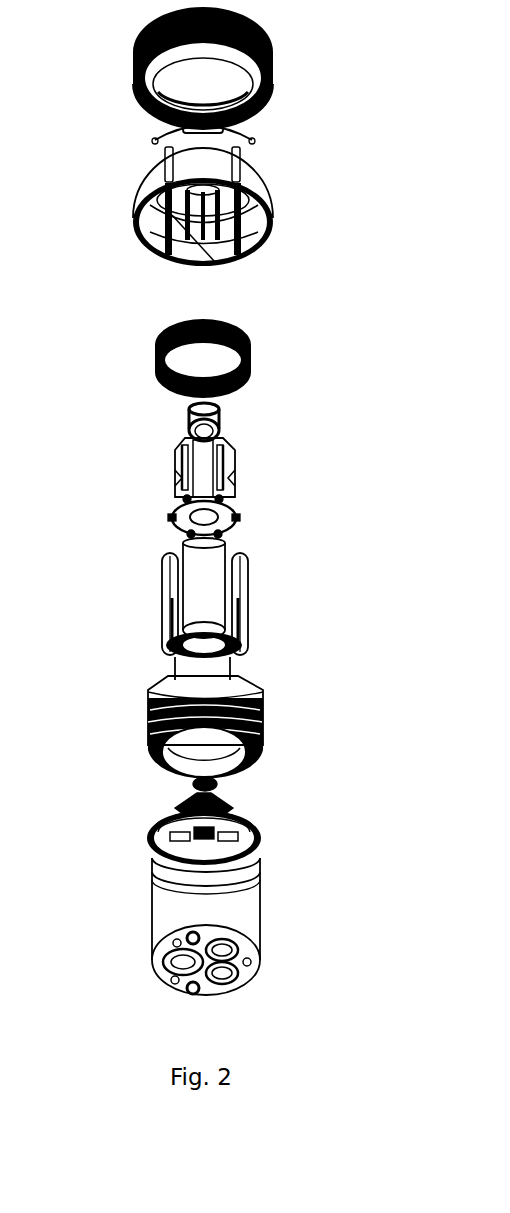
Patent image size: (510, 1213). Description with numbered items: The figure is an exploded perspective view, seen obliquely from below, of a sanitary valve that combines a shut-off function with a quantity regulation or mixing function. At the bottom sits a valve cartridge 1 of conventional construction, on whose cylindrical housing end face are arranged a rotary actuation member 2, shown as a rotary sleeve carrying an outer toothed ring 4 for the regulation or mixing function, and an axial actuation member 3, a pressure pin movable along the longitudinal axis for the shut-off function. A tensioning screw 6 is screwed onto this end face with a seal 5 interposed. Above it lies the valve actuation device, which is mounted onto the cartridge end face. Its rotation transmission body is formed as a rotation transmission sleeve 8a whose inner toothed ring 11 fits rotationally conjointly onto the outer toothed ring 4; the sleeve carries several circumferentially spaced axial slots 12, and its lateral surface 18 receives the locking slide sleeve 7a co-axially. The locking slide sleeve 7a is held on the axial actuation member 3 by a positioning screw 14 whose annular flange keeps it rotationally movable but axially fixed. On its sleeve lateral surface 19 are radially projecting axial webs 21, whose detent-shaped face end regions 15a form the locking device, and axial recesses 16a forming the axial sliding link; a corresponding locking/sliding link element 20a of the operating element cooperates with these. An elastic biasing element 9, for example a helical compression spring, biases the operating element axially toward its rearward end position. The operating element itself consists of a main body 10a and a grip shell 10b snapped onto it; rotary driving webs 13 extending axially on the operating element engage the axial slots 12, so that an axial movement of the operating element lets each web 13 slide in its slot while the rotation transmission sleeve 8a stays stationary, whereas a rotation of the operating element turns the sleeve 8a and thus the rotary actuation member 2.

The valve cartridge 1 is at (243, 917).
The rotary actuation member 2 is at (228, 805).
The axial actuation member 3 is at (218, 789).
The outer toothed ring 4 is at (180, 803).
The seal 5 is at (147, 838).
The tensioning screw 6 is at (265, 717).
The locking slide sleeve 7a is at (196, 472).
The rotation transmission sleeve 8a is at (217, 603).
The elastic biasing element 9 is at (252, 350).
The main body 10a is at (207, 230).
The grip shell 10b is at (273, 52).
The inner toothed ring 11 is at (243, 647).
The axial slot 12 is at (227, 588).
The rotary driving web 13 is at (227, 265).
The positioning screw 14 is at (222, 419).
The face end region 15a is at (190, 477).
The axial recess 16a is at (203, 470).
The lateral surface 18 is at (247, 568).
The sleeve lateral surface 19 is at (233, 484).
The locking/sliding link element 20a is at (202, 228).
The axial web 21 is at (213, 455).